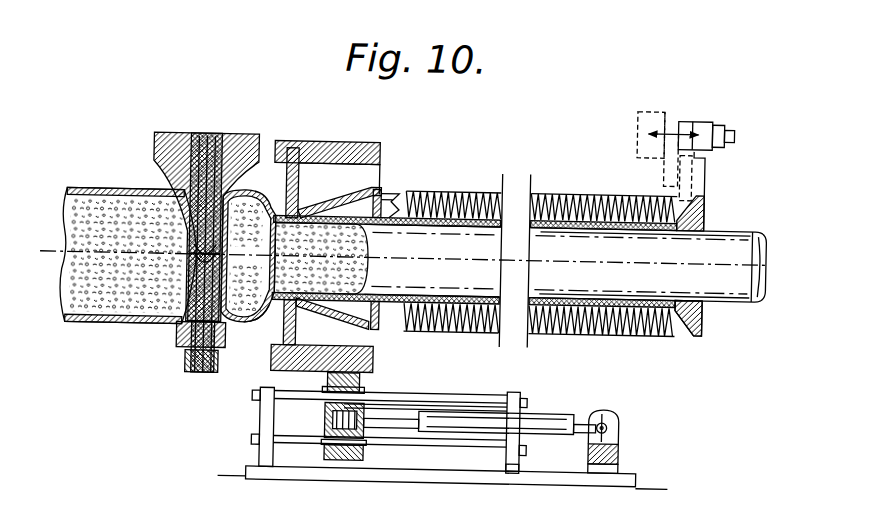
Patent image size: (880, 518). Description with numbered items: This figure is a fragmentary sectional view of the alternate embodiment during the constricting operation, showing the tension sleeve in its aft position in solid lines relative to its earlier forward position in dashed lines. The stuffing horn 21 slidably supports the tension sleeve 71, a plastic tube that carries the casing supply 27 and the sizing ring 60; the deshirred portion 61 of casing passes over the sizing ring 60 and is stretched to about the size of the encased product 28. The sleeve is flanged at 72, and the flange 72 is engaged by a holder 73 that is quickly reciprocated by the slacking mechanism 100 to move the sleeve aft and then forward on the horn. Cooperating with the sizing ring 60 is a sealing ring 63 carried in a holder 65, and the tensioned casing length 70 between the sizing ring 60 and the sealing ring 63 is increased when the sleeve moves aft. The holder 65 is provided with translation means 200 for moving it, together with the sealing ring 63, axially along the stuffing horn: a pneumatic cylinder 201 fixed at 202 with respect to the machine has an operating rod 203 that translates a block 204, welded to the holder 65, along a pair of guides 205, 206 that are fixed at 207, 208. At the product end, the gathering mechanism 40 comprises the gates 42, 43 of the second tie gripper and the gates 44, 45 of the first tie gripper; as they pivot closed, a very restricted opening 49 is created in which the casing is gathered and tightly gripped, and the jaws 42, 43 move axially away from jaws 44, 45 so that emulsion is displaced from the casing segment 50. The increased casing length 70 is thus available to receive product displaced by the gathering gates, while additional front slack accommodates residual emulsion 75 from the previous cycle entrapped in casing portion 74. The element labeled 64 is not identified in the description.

The stuffing horn 21 is at (720, 297).
The casing supply 27 is at (560, 192).
The encased product 28 is at (126, 195).
The gathering mechanism 40 is at (169, 232).
The upper jaw 42 is at (188, 232).
The lower jaw 43 is at (190, 287).
The upper jaw 44 is at (230, 230).
The lower jaw 45 is at (230, 298).
The restricted opening 49 is at (302, 258).
The casing segment 50 is at (190, 278).
The sizing ring 60 is at (392, 225).
The deshirred portion 61 is at (388, 190).
The sealing ring 63 is at (300, 322).
The lower housing 64 is at (290, 368).
The holder 65 is at (352, 144).
The casing length 70 is at (332, 195).
The tension sleeve 71 is at (450, 225).
The flange 72 is at (706, 208).
The holder 73 is at (706, 165).
The casing portion 74 is at (252, 326).
The residual emulsion 75 is at (295, 241).
The slacking mechanism 100 is at (704, 108).
The translation means 200 is at (435, 428).
The pneumatic cylinder 201 is at (508, 398).
The fixed point 202 is at (622, 424).
The operating rod 203 is at (400, 446).
The block 204 is at (366, 388).
The guide 205 is at (442, 392).
The guide 206 is at (478, 465).
The fixed point 207 is at (262, 457).
The fixed point 208 is at (552, 466).